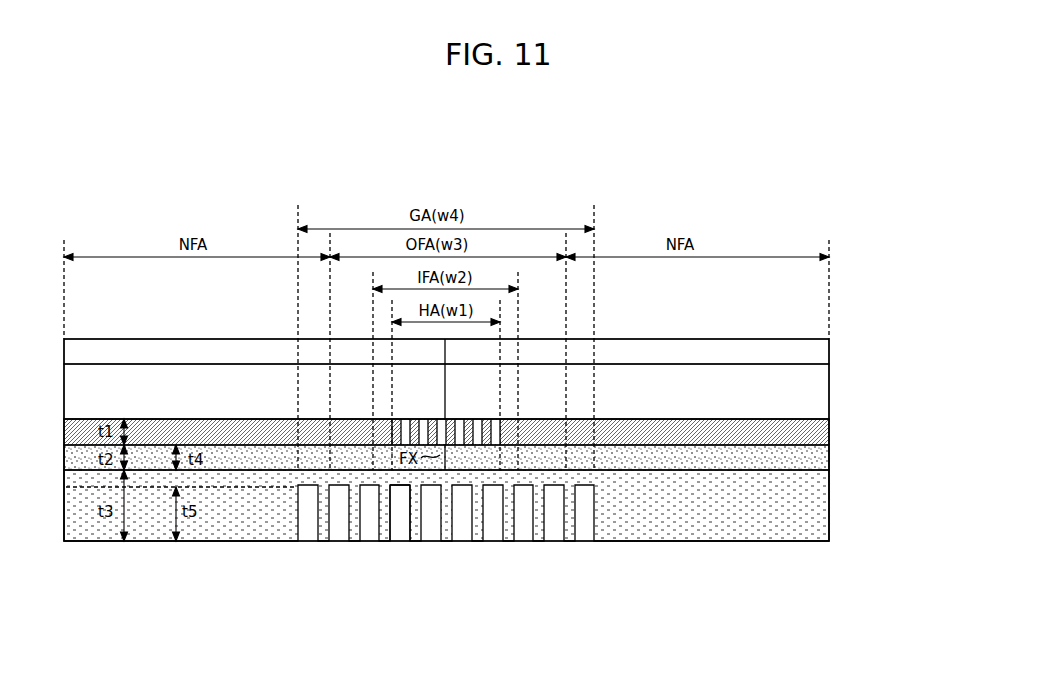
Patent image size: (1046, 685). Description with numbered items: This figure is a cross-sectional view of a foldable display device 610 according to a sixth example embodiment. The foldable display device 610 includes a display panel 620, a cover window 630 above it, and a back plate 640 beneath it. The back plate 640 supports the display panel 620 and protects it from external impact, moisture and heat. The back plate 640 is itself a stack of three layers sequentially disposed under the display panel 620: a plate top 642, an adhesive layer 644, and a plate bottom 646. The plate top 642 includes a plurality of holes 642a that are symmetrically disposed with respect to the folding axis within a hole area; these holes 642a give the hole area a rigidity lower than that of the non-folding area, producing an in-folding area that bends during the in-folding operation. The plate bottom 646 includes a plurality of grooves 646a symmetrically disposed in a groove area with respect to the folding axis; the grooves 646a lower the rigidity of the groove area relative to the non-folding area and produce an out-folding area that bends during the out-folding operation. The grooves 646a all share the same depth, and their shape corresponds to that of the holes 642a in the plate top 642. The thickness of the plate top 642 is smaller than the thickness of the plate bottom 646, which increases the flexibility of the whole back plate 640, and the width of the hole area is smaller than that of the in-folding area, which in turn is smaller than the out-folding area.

The foldable display device 610 is at (460, 152).
The cover window 630 is at (830, 354).
The display panel 620 is at (830, 391).
The back plate 640 is at (914, 431).
The plate top 642 is at (830, 433).
The holes 642a is at (432, 419).
The adhesive layer 644 is at (830, 460).
The plate bottom 646 is at (830, 508).
The grooves 646a is at (398, 530).